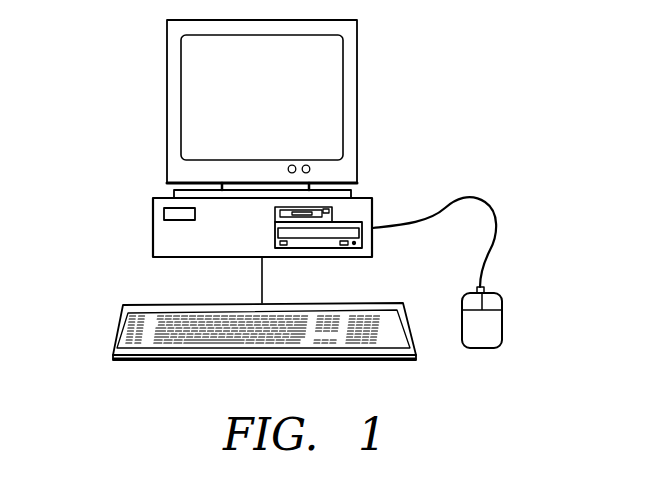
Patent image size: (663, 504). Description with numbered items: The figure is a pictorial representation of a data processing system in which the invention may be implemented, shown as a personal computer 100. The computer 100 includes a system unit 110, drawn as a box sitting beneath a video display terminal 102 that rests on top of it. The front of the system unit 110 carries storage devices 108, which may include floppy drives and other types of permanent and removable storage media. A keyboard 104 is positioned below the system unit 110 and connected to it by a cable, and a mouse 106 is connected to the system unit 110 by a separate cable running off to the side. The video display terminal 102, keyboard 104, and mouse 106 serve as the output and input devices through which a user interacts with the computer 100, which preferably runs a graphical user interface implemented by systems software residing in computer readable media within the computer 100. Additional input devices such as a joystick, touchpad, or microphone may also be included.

The computer 100 is at (286, 215).
The video display terminal 102 is at (226, 109).
The keyboard 104 is at (229, 331).
The mouse 106 is at (442, 303).
The storage devices 108 is at (282, 229).
The system unit 110 is at (226, 250).